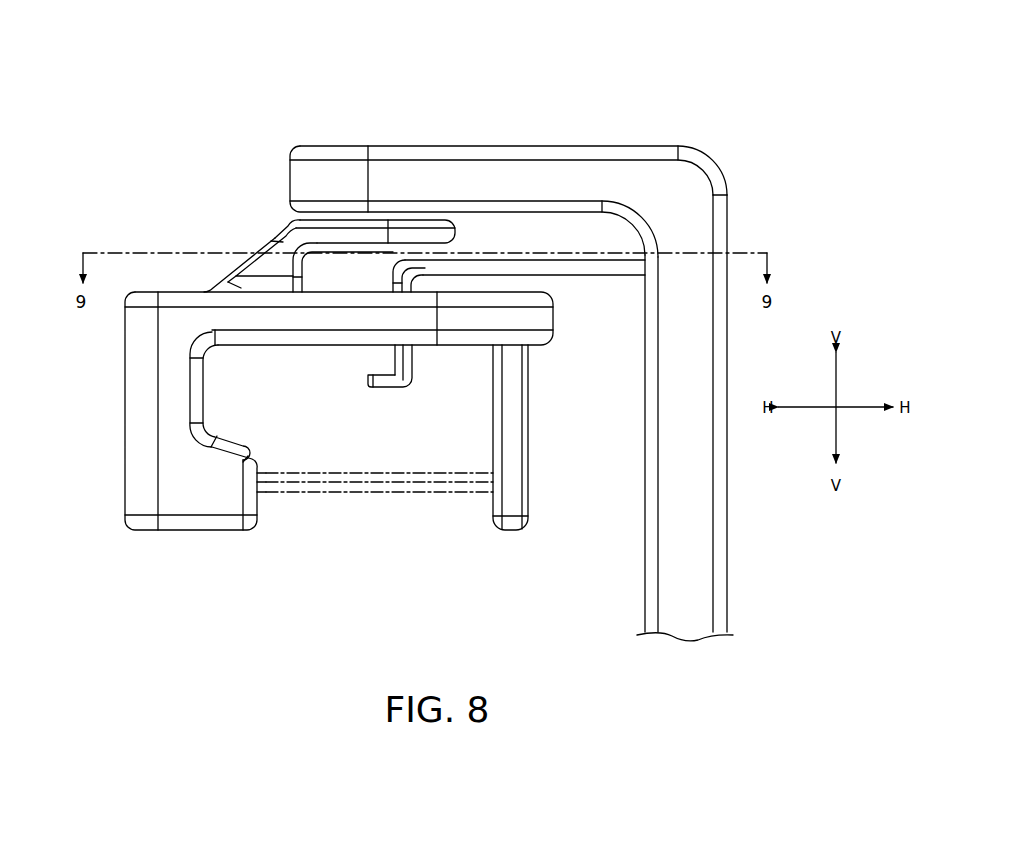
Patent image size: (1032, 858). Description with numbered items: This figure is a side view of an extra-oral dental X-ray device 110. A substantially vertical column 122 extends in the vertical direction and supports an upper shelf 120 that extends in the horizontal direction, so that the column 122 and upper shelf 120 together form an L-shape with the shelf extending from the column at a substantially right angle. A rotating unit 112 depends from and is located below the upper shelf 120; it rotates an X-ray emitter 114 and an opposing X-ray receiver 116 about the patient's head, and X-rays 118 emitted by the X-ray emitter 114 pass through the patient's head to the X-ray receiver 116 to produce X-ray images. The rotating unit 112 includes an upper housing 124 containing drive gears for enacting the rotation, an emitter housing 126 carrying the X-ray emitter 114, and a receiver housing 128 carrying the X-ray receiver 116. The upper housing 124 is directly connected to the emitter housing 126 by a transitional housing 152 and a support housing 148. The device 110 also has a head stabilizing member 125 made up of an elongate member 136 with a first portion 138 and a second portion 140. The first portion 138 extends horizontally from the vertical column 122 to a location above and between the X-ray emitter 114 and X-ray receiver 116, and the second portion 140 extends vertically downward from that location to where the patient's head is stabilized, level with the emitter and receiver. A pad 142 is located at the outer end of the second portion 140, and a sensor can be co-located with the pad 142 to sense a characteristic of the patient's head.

The X-ray device 110 is at (722, 63).
The rotating unit 112 is at (107, 240).
The X-ray emitter 114 is at (261, 488).
The X-ray receiver 116 is at (493, 506).
The X-rays 118 is at (368, 496).
The upper shelf 120 is at (469, 146).
The substantially vertical column 122 is at (710, 520).
The upper housing 124 is at (262, 228).
The head stabilizing member 125 is at (612, 278).
The emitter housing 126 is at (133, 426).
The receiver housing 128 is at (508, 469).
The elongate member 136 is at (540, 268).
The first portion 138 is at (617, 275).
The second portion 140 is at (420, 283).
The pad 142 is at (390, 388).
The support housing 148 is at (270, 320).
The transitional housing 152 is at (277, 248).